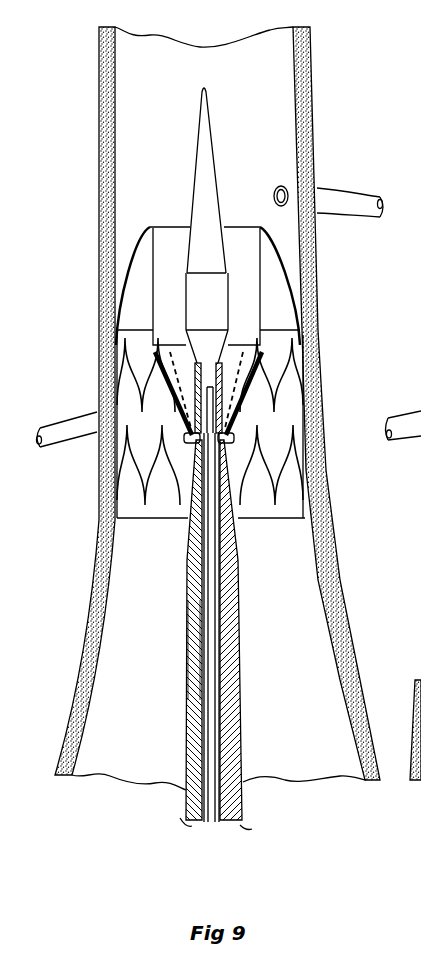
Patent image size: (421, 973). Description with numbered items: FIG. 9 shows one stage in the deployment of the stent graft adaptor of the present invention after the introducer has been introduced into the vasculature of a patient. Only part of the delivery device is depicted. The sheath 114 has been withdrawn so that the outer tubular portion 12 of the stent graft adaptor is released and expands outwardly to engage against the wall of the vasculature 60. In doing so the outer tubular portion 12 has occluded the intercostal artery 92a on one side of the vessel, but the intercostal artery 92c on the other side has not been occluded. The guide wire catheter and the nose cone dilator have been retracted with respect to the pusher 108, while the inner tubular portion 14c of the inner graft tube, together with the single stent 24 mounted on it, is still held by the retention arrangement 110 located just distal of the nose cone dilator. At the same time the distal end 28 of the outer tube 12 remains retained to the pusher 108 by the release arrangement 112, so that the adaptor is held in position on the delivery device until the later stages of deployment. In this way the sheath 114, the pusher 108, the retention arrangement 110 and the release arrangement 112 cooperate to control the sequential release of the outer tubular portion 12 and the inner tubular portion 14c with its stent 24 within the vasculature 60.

The wall of the vasculature 60 is at (100, 303).
The intercostal artery 92a is at (84, 422).
The intercostal artery 92c is at (356, 200).
The outer graft tube 12 is at (100, 452).
The inner portion of the inner graft tube 14c is at (250, 370).
The stent 24 is at (255, 405).
The retention arrangement 110 is at (238, 446).
The distal end of the outer tube 28 is at (242, 519).
The pusher 108 is at (192, 530).
The release arrangement 112 is at (240, 528).
The sheath 114 is at (187, 628).